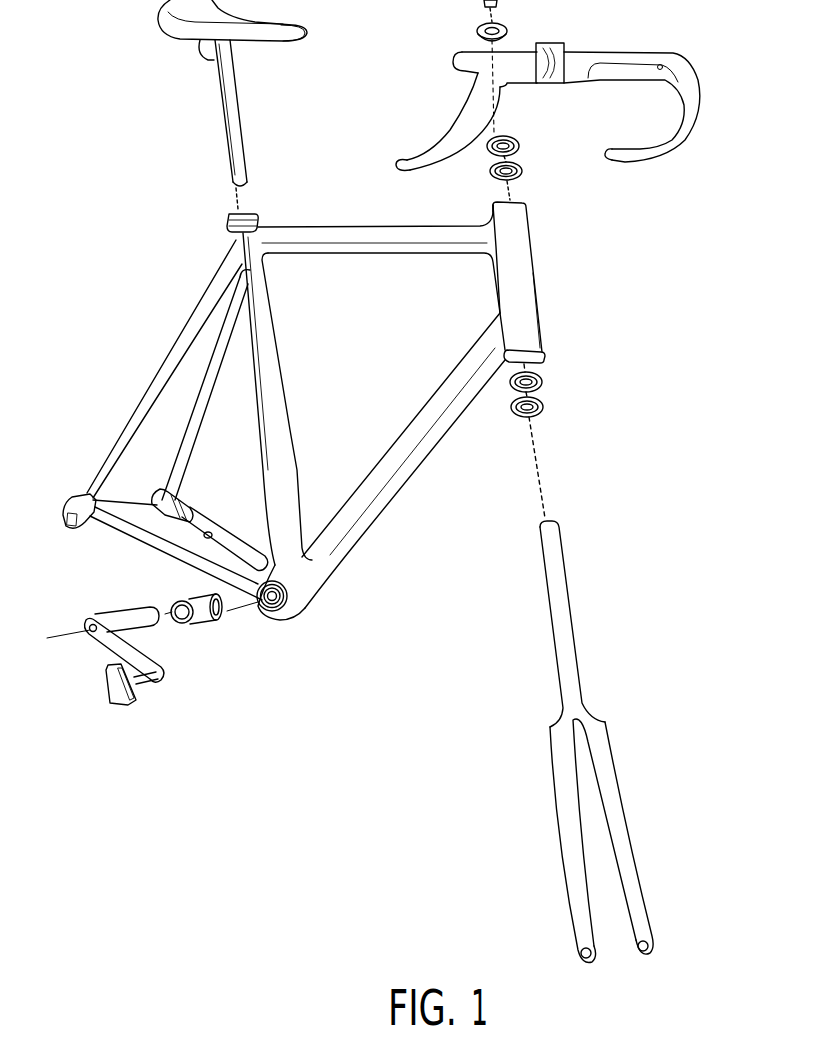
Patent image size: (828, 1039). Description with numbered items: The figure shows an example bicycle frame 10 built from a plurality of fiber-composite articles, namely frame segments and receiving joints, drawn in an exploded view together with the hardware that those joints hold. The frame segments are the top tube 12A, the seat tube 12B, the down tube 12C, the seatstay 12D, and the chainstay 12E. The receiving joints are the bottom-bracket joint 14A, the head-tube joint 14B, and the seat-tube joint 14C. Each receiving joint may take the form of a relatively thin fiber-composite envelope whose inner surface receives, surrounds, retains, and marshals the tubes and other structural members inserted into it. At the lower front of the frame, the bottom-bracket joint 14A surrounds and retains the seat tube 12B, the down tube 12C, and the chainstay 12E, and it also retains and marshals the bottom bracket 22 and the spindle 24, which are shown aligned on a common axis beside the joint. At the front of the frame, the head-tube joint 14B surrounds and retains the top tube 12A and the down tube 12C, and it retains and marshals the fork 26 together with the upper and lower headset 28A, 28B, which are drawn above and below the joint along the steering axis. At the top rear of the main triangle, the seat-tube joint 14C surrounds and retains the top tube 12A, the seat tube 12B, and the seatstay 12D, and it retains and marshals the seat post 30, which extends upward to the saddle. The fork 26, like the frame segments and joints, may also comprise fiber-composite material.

The bicycle frame 10 is at (330, 382).
The top tube 12A is at (336, 212).
The seat tube 12B is at (295, 380).
The down tube 12C is at (390, 449).
The seatstay 12D is at (230, 251).
The chainstay 12E is at (238, 546).
The bottom-bracket joint 14A is at (308, 604).
The head-tube joint 14B is at (532, 270).
The seat-tube joint 14C is at (228, 218).
The bottom bracket 22 is at (217, 621).
The spindle 24 is at (112, 613).
The fork 26 is at (610, 732).
The headset 28A is at (545, 149).
The headset 28B is at (559, 395).
The seat post 30 is at (218, 92).